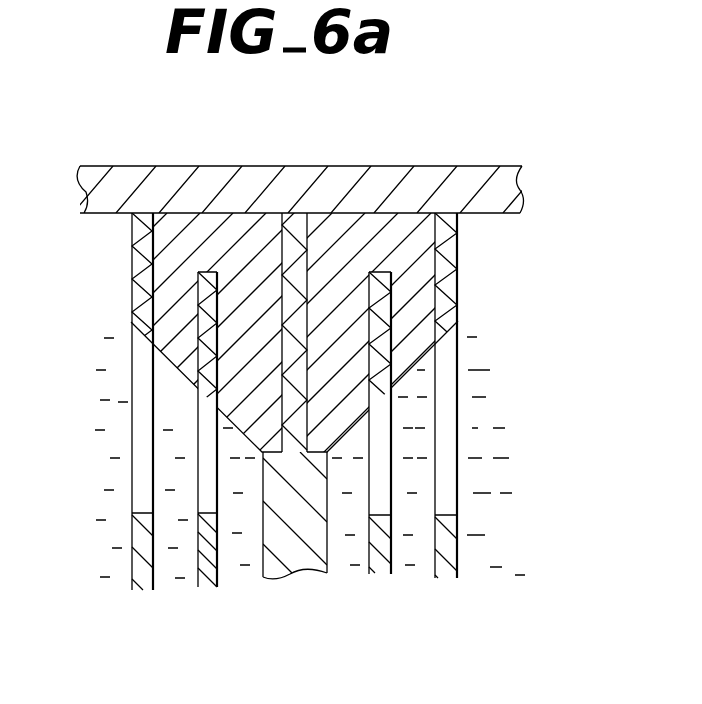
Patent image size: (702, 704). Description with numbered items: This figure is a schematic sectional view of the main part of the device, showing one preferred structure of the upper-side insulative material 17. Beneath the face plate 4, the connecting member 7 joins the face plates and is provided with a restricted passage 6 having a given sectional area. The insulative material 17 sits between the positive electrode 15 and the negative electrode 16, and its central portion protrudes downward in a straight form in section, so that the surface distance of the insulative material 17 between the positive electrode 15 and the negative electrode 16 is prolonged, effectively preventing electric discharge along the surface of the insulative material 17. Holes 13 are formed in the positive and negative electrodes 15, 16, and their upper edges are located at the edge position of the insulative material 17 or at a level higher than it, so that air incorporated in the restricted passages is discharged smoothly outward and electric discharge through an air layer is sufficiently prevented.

The face plate 4 is at (202, 177).
The restricted passage 6 is at (245, 563).
The connecting member 7 is at (522, 552).
The holes 13 is at (457, 410).
The positive electrode 15 is at (318, 243).
The negative electrode 16 is at (395, 550).
The upper-side insulative material 17 is at (240, 325).